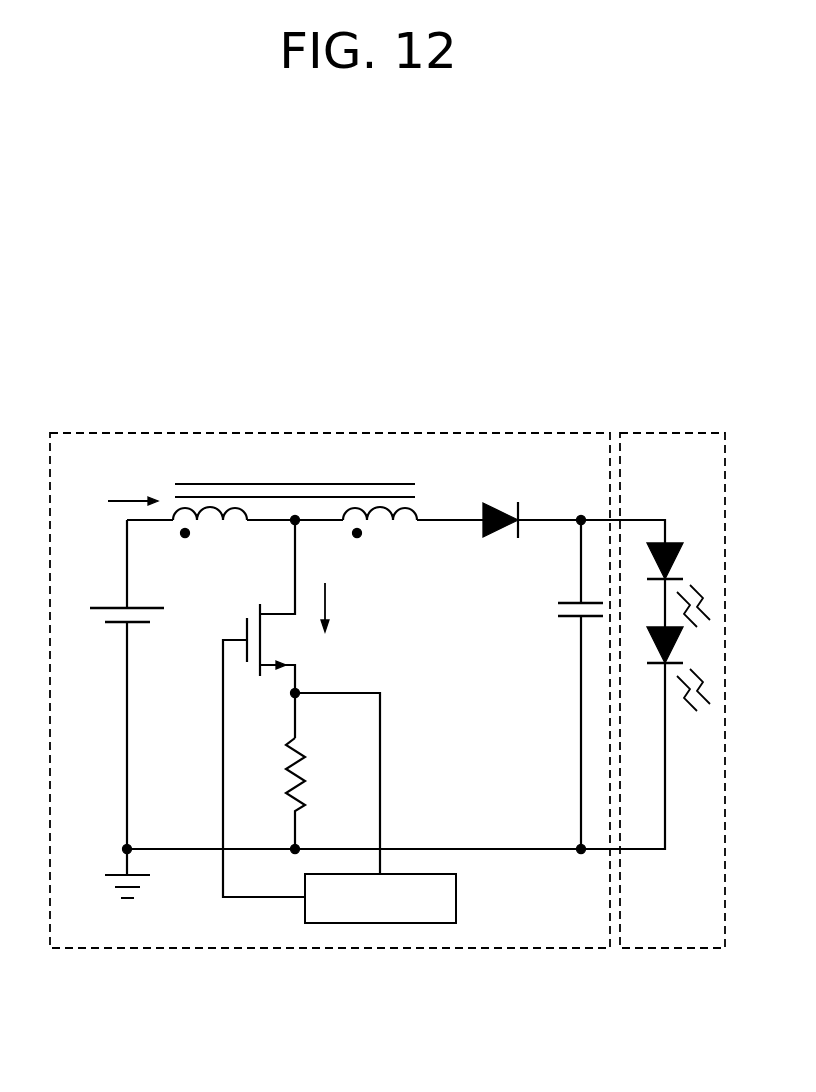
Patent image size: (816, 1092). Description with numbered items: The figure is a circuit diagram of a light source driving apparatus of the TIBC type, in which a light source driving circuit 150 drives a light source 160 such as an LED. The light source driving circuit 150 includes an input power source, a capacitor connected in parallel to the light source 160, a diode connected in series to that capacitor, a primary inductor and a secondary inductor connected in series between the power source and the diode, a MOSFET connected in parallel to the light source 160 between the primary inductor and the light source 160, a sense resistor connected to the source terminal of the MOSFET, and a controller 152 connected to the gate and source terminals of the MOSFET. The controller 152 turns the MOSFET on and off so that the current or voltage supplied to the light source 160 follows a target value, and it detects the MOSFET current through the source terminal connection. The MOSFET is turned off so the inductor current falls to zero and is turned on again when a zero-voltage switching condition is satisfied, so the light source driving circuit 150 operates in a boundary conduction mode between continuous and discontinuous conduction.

The light source driving circuit 150 is at (328, 433).
The controller 152 is at (380, 923).
The light source 160 is at (670, 433).